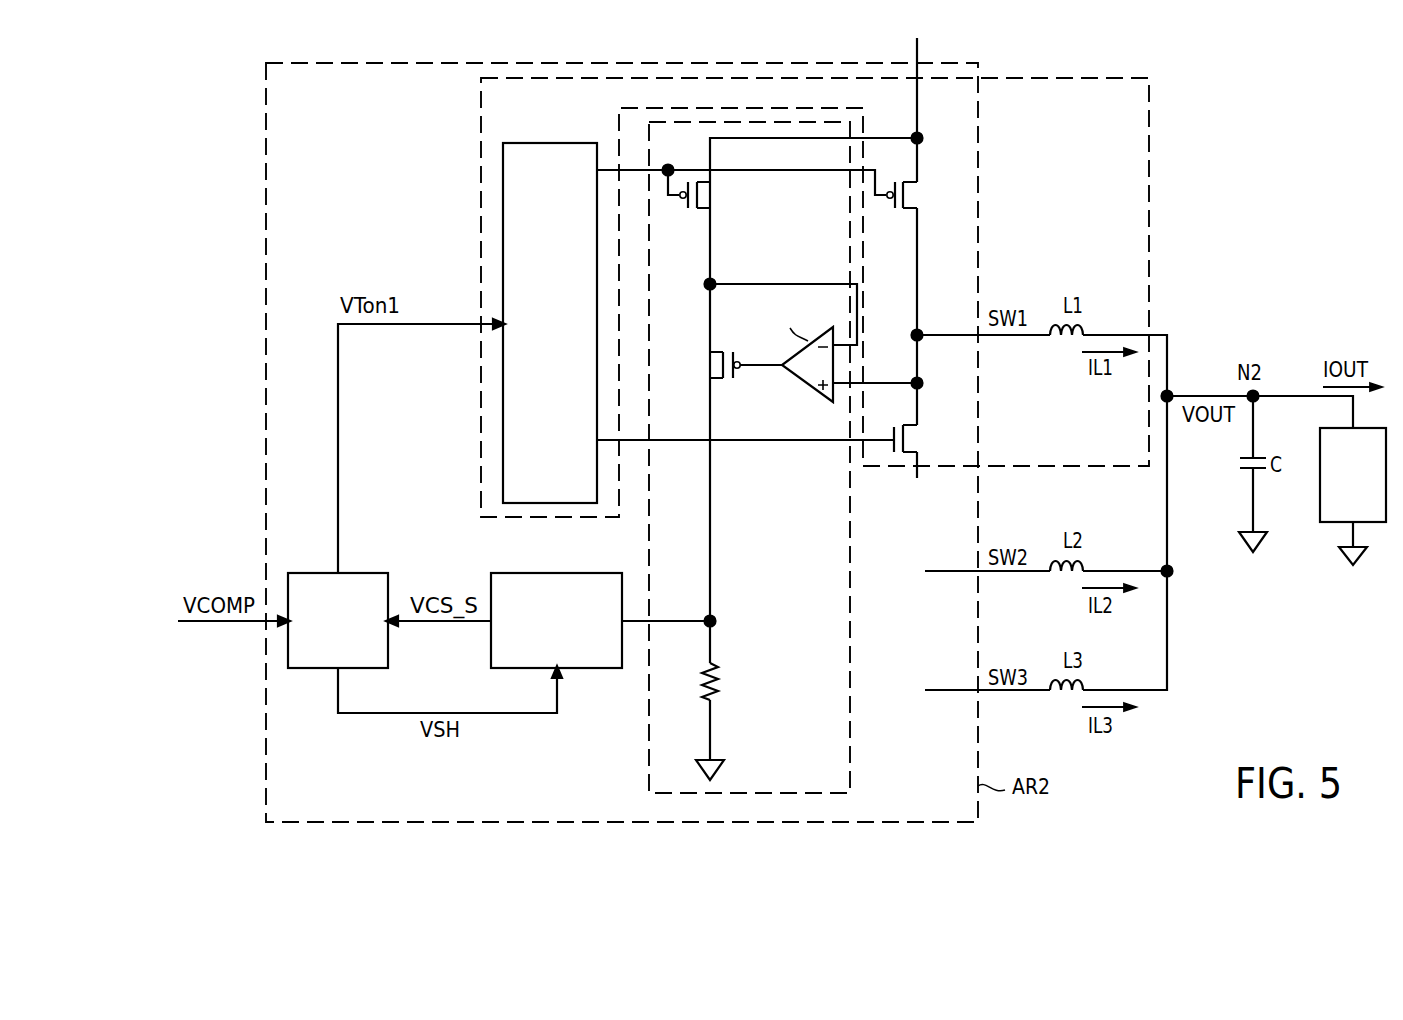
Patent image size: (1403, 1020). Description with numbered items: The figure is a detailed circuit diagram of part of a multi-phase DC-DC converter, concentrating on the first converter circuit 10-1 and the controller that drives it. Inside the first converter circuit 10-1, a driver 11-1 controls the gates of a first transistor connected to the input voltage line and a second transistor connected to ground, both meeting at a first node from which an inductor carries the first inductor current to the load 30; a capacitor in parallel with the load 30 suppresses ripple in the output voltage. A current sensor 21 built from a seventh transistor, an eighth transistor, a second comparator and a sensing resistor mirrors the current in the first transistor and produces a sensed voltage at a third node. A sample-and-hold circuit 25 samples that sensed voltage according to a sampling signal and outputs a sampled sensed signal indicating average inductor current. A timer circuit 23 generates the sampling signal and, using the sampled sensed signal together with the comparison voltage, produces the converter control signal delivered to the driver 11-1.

The first converter circuit 10-1 is at (1149, 130).
The driver 11-1 is at (567, 127).
The current sensor 21 is at (850, 633).
The timer circuit 23 is at (375, 573).
The sample-and-hold circuit 25 is at (590, 573).
The load 30 is at (1330, 523).